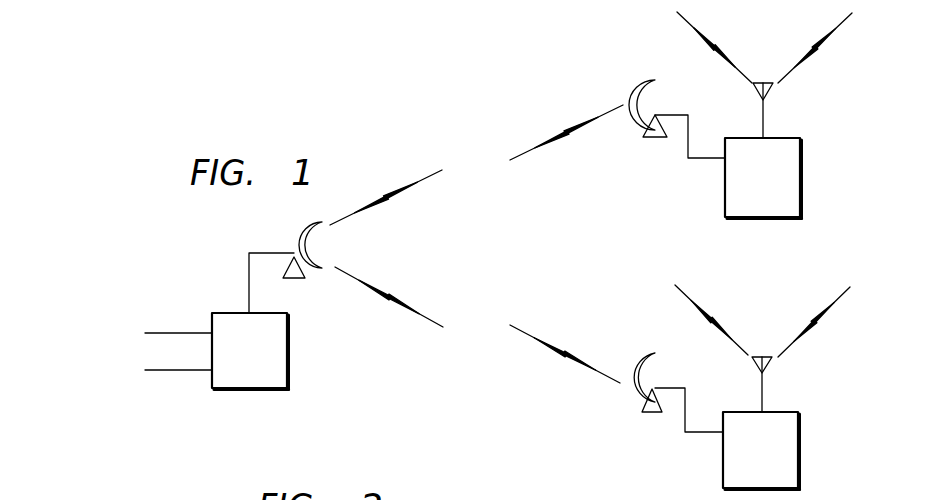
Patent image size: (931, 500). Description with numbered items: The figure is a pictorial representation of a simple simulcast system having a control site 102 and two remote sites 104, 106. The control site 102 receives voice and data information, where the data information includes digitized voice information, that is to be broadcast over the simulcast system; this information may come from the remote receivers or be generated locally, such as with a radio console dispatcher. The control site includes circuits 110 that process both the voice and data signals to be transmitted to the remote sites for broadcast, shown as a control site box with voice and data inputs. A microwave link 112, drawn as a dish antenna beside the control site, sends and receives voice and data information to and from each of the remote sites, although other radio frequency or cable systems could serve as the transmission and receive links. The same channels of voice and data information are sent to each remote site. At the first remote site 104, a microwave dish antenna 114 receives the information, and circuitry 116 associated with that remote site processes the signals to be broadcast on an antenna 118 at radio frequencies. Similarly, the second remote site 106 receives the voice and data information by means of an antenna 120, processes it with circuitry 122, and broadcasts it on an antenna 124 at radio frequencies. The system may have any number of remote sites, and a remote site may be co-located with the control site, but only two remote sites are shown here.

The control site 102 is at (197, 272).
The remote site 104 is at (689, 202).
The remote site 106 is at (689, 479).
The circuits 110 is at (288, 349).
The microwave link 112 is at (296, 228).
The remote site A satellite dish antenna 114 is at (658, 97).
The circuitry 116 is at (800, 165).
The antenna 118 is at (768, 95).
The antenna 120 is at (656, 371).
The circuitry 122 is at (798, 450).
The antenna 124 is at (768, 367).